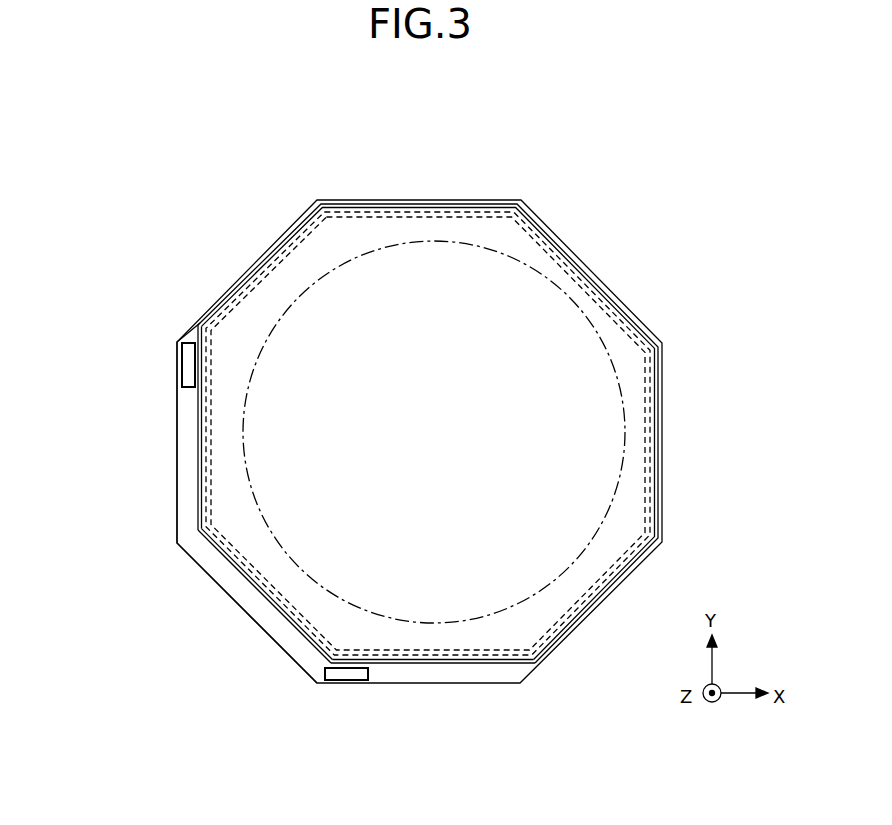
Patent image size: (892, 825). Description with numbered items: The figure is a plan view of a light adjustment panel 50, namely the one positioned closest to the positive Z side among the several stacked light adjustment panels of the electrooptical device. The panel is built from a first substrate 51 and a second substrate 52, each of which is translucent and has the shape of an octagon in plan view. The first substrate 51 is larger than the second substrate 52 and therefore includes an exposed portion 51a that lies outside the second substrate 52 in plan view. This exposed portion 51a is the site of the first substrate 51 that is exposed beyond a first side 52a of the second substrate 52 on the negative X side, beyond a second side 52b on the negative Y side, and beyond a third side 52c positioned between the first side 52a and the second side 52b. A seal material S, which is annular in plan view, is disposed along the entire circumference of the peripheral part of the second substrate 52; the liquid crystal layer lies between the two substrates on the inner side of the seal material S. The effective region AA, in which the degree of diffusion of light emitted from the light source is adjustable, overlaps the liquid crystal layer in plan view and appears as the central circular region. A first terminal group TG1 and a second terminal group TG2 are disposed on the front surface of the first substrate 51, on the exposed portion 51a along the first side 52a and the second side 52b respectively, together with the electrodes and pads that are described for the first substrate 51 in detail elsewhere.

The light adjustment panel 50 is at (530, 156).
The first substrate 51 is at (208, 470).
The exposed portion 51a is at (187, 328).
The second substrate 52 is at (267, 300).
The first side 52a is at (198, 453).
The second side 52b is at (502, 665).
The third side 52c is at (235, 568).
The effective region AA is at (365, 245).
The seal material S is at (664, 370).
The first terminal group TG1 is at (183, 363).
The second terminal group TG2 is at (347, 673).